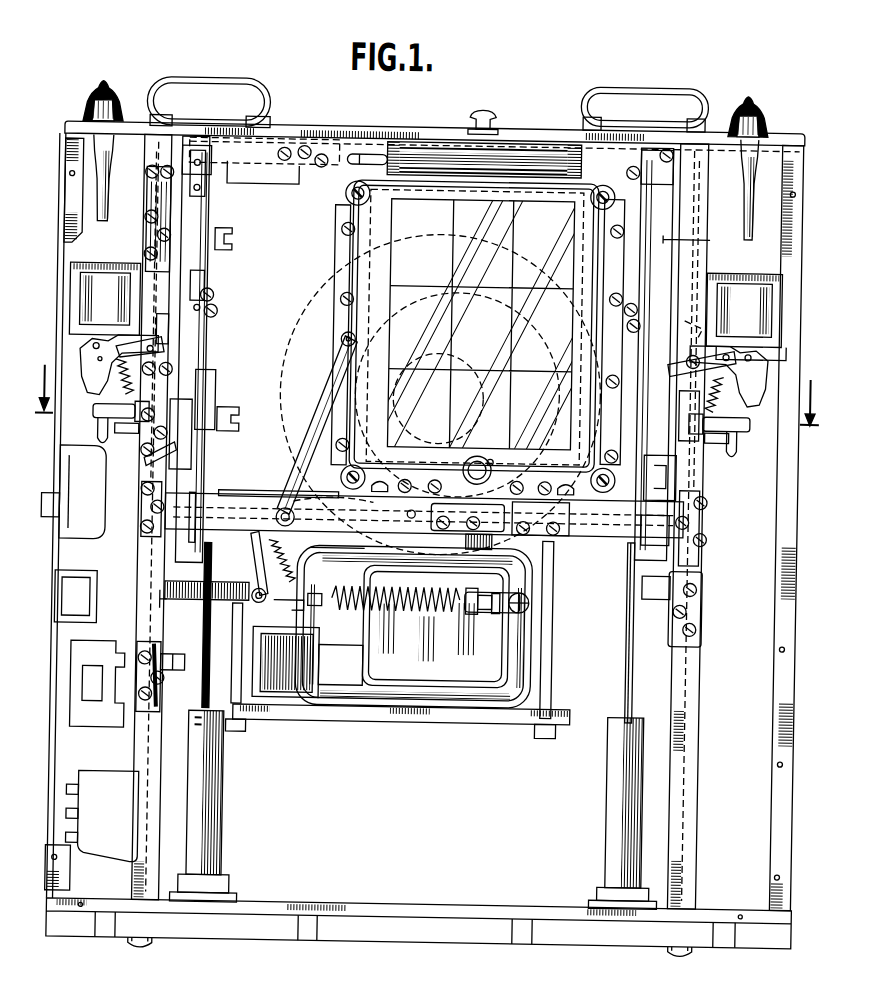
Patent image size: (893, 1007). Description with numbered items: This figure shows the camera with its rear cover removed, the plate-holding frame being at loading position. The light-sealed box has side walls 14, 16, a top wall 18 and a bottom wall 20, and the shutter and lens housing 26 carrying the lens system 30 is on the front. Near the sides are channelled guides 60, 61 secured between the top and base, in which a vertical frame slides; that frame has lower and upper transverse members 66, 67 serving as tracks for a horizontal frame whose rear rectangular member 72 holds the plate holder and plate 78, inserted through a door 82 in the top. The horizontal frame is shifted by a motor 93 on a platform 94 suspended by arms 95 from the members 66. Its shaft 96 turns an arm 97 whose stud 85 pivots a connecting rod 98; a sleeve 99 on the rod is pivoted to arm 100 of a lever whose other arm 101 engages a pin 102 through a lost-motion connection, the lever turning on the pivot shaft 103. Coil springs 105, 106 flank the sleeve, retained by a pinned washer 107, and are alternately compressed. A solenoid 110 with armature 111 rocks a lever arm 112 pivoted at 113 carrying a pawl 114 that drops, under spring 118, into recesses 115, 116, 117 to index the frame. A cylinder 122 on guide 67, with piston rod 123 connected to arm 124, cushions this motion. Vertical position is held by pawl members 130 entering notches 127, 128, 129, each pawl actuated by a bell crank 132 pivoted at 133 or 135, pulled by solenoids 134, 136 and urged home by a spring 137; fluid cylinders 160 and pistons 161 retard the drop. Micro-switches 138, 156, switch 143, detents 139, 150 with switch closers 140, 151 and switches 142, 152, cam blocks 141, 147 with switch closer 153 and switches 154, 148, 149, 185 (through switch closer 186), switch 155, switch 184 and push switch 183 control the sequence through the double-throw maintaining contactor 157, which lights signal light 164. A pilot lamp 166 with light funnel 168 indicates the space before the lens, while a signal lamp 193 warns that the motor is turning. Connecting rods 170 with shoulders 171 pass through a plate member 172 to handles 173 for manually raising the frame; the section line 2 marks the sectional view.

The plate space 2 is at (427, 409).
The side wall 14 is at (803, 336).
The side wall 16 is at (60, 690).
The top wall 18 is at (275, 125).
The bottom wall 20 is at (341, 904).
The shutter and lens housing 26 is at (288, 437).
The lens system 30 is at (478, 364).
The channelled guide 60 is at (702, 660).
The channelled guide 61 is at (156, 193).
The transverse bottom member 66 is at (265, 492).
The transverse top member 67 is at (240, 166).
The rear rectangular member 72 is at (358, 267).
The photographic plate 78 is at (348, 300).
The door 82 is at (496, 124).
The stud 85 is at (540, 593).
The motor 93 is at (492, 690).
The platform 94 is at (342, 716).
The arm 95 is at (245, 678).
The motor shaft 96 is at (486, 582).
The arm 97 is at (504, 594).
The connecting rod 98 is at (324, 598).
The sleeve 99 is at (258, 572).
The lever arm 100 is at (262, 556).
The lever arm 101 is at (322, 408).
The pin 102 is at (346, 338).
The pivot 103 is at (299, 509).
The coil spring 105 is at (193, 598).
The coil spring 106 is at (413, 604).
The pinned washer 107 is at (168, 598).
The solenoid 110 is at (288, 692).
The armature 111 is at (302, 606).
The lever arm 112 is at (340, 542).
The pivot 113 is at (540, 522).
The pawl 114 is at (430, 528).
The recess 115 is at (414, 506).
The recess 116 is at (448, 472).
The recess 117 is at (542, 475).
The spring 118 is at (295, 545).
The cylinder 122 is at (448, 134).
The piston rod 123 is at (370, 150).
The arm 124 is at (350, 198).
The notch 127 is at (685, 414).
The notch 128 is at (417, 325).
The notch 129 is at (715, 258).
The pawl member 130 is at (140, 430).
The bell crank 132 is at (100, 408).
The pivot 133 is at (165, 345).
The solenoid 134 is at (104, 298).
The pivot 135 is at (708, 358).
The solenoid 136 is at (746, 316).
The spring 137 is at (423, 375).
The micro-switch 138 is at (235, 236).
The detent 139 is at (206, 190).
The switch closer 140 is at (208, 200).
The cam block 141 is at (199, 528).
The switch 142 is at (165, 228).
The switch 143 is at (155, 507).
The cam block 147 is at (672, 518).
The switch 148 is at (680, 596).
The switch 149 is at (704, 231).
The detent 150 is at (187, 285).
The switch closer 151 is at (195, 399).
The switch 152 is at (158, 460).
The switch closer 153 is at (183, 652).
The switch 154 is at (164, 668).
The switch 155 is at (468, 528).
The micro-switch 156 is at (228, 416).
The double-throw maintaining contactor 157 is at (92, 715).
The cylinder 160 is at (235, 798).
The piston 161 is at (218, 672).
The signal light 164 is at (98, 85).
The pilot lamp 166 is at (484, 452).
The light funnel 168 is at (498, 453).
The connecting rod 170 is at (218, 296).
The shoulder 171 is at (221, 308).
The plate member 172 is at (212, 168).
The handle 173 is at (188, 82).
The push switch 183 is at (60, 495).
The switch 184 is at (300, 126).
The switch 185 is at (690, 500).
The switch closer 186 is at (660, 478).
The signal lamp 193 is at (771, 100).